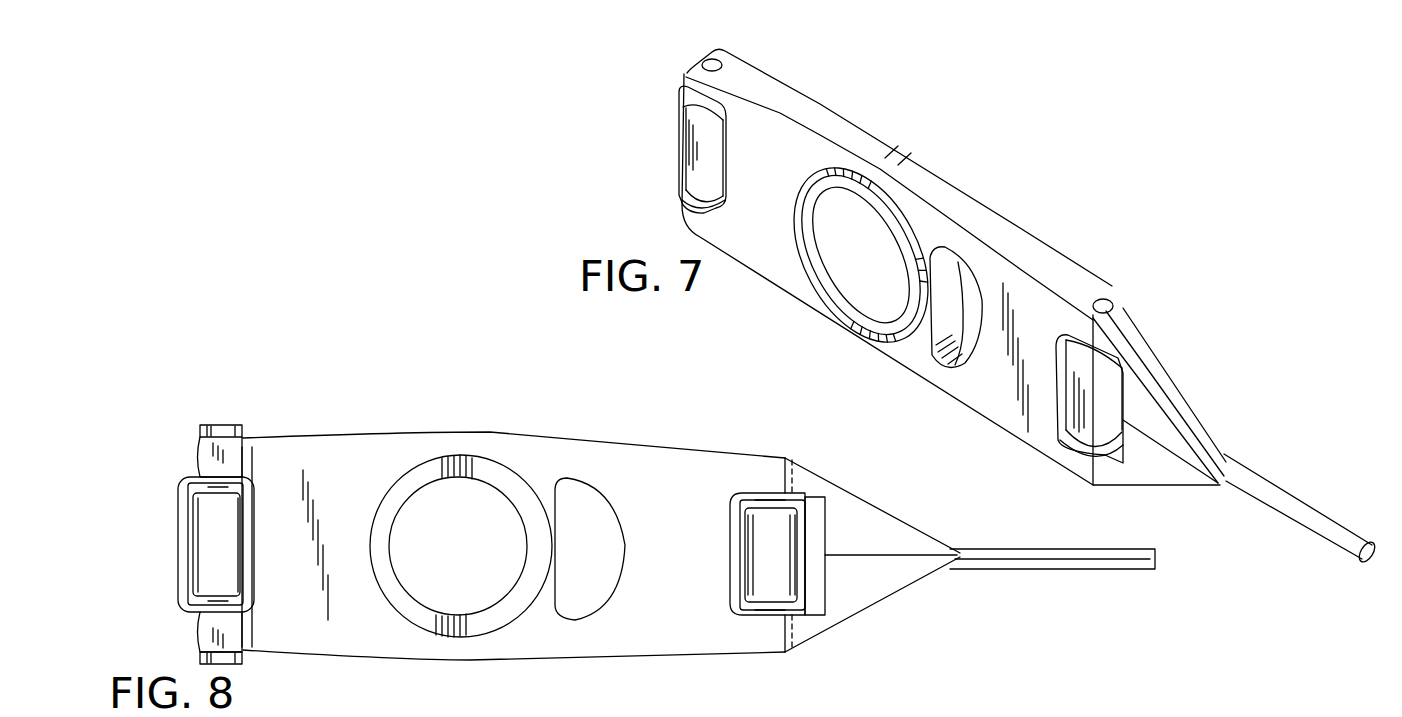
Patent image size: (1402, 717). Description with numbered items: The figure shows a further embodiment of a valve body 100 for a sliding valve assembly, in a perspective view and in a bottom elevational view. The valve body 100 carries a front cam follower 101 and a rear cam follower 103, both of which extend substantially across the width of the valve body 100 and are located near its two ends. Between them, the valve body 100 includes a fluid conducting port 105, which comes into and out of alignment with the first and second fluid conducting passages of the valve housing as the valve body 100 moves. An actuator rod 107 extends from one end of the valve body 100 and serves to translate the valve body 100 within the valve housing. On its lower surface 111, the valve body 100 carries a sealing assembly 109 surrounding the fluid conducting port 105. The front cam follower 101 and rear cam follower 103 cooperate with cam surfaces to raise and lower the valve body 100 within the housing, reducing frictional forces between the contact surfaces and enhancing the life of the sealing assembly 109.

In FIG. 7, the valve body 100 is at (1040, 180).
In FIG. 8, the valve body 100 is at (343, 405).
In FIG. 7, the front cam follower 101 is at (1098, 390).
In FIG. 8, the front cam follower 101 is at (793, 535).
In FIG. 7, the rear cam follower 103 is at (688, 162).
In FIG. 8, the rear cam follower 103 is at (197, 556).
In FIG. 7, the fluid conducting port 105 is at (967, 308).
In FIG. 8, the fluid conducting port 105 is at (588, 503).
In FIG. 7, the actuator rod 107 is at (1268, 480).
In FIG. 8, the actuator rod 107 is at (1040, 553).
In FIG. 7, the sealing assembly 109 is at (885, 217).
In FIG. 8, the sealing assembly 109 is at (436, 458).
In FIG. 7, the lower surface 111 is at (786, 190).
In FIG. 8, the lower surface 111 is at (698, 561).